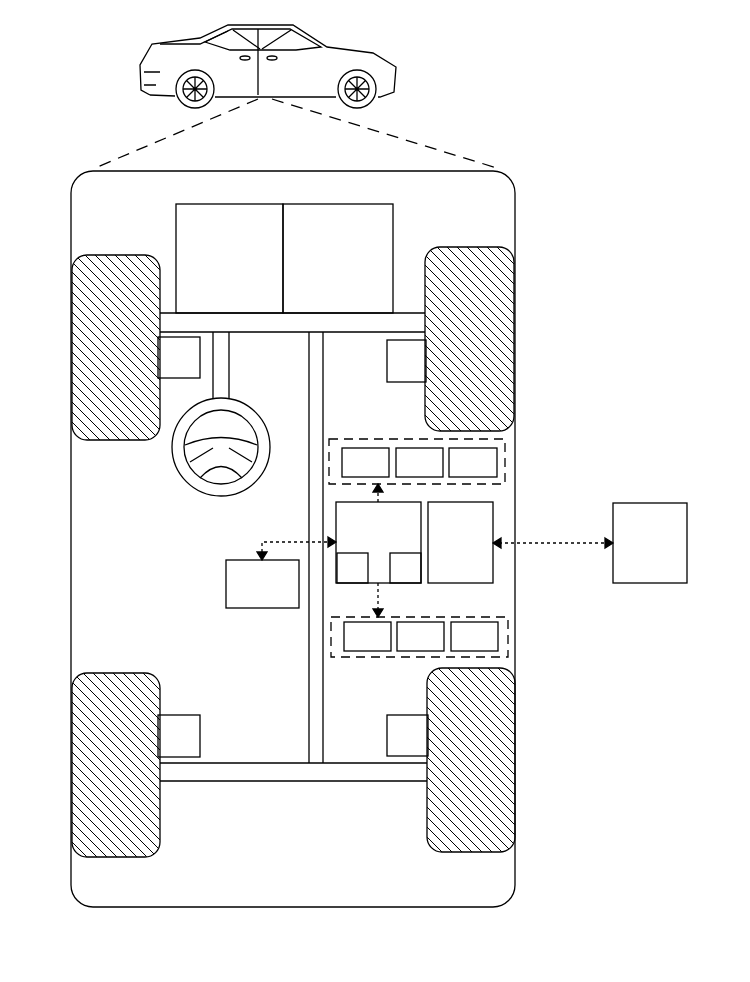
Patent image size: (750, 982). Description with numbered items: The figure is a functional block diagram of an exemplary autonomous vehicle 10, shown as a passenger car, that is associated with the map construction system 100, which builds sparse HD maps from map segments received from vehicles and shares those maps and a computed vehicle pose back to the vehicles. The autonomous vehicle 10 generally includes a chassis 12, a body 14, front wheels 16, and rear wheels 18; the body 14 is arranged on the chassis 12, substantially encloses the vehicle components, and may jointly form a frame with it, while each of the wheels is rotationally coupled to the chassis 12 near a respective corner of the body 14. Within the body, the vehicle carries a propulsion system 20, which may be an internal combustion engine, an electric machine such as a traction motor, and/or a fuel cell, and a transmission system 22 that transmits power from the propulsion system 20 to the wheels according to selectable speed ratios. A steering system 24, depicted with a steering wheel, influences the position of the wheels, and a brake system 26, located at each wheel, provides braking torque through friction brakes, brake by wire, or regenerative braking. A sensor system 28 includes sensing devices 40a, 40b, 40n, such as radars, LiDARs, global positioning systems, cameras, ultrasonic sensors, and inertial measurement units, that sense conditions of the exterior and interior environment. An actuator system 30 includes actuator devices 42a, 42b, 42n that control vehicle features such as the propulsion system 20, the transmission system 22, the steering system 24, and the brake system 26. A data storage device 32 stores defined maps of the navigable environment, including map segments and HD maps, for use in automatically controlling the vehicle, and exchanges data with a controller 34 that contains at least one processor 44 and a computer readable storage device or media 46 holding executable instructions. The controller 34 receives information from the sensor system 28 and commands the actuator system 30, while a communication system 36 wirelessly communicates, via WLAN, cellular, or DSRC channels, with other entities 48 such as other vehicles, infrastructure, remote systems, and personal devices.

The autonomous vehicle 10 is at (141, 80).
The map construction system 100 is at (547, 173).
The body 14 is at (71, 527).
The chassis 12 is at (297, 693).
The front wheels 16 is at (113, 255).
The rear wheels 18 is at (130, 857).
The propulsion system 20 is at (229, 258).
The transmission system 22 is at (338, 258).
The steering system 24 is at (248, 352).
The brake system 26 is at (293, 547).
The sensor system 28 is at (417, 440).
The sensing device 40a is at (365, 462).
The sensing device 40b is at (419, 462).
The sensing device 40n is at (473, 462).
The actuator system 30 is at (419, 659).
The actuator device 42a is at (367, 636).
The actuator device 42b is at (420, 636).
The actuator device 42n is at (474, 636).
The data storage device 32 is at (262, 584).
The controller 34 is at (378, 542).
The processor 44 is at (352, 568).
The computer readable storage device or media 46 is at (405, 568).
The communication system 36 is at (460, 542).
The other entities 48 is at (650, 543).